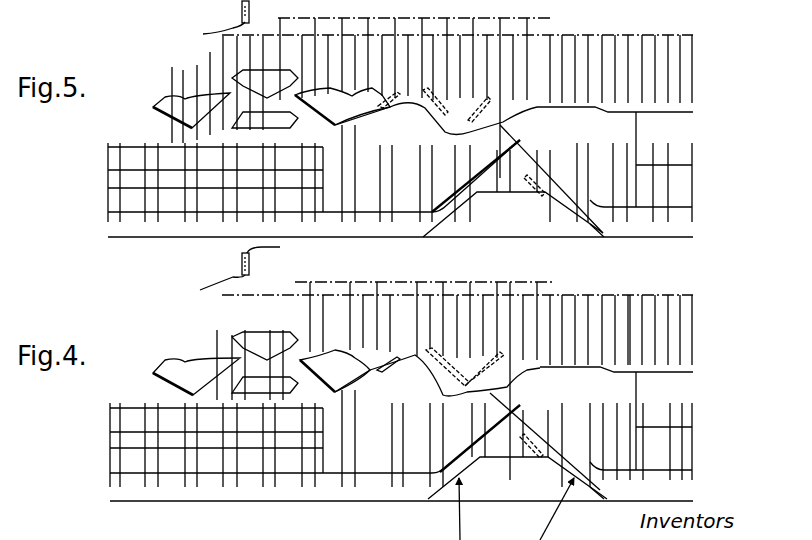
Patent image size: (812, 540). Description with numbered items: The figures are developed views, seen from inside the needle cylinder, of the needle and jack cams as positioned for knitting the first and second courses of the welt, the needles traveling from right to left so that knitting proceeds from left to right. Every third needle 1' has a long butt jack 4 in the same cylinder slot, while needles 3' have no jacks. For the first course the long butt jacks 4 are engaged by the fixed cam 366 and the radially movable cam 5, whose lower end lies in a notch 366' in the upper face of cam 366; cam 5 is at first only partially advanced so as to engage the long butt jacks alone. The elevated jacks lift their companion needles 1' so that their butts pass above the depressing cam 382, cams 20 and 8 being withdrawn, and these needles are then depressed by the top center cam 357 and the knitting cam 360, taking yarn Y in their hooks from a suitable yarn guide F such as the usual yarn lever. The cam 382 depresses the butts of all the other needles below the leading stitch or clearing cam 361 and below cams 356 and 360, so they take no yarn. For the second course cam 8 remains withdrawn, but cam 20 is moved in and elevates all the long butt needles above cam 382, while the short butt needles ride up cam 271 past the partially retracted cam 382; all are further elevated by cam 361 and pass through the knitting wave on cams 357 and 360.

In FIG. 5, the yarn Y is at (208, 32).
In FIG. 4, the yarn Y is at (226, 280).
In FIG. 5, the yarn guide F is at (252, 14).
In FIG. 4, the yarn guide F is at (252, 264).
In FIG. 5, the knitting cam 360 is at (182, 108).
In FIG. 4, the knitting cam 360 is at (197, 378).
In FIG. 5, the cam 356 is at (247, 117).
In FIG. 4, the cam 356 is at (262, 380).
In FIG. 4, the top center cam 357 is at (262, 343).
In FIG. 5, the leading stitch or clearing cam 361 is at (318, 98).
In FIG. 4, the leading stitch or clearing cam 361 is at (320, 364).
In FIG. 5, the depressing cam 382 is at (374, 110).
In FIG. 4, the depressing cam 382 is at (390, 377).
In FIG. 5, the cam 271 is at (418, 110).
In FIG. 4, the cam 271 is at (428, 392).
In FIG. 5, the cam 20 is at (440, 118).
In FIG. 4, the cam 20 is at (433, 352).
In FIG. 5, the cam 8 is at (486, 106).
In FIG. 4, the cam 8 is at (492, 358).
In FIG. 5, the radially movable cam 5 is at (522, 182).
In FIG. 4, the radially movable cam 5 is at (535, 432).
In FIG. 5, the fixed cam 366 is at (551, 131).
In FIG. 4, the fixed cam 366 is at (533, 390).
In FIG. 5, the notch 366' is at (552, 205).
In FIG. 4, the notch 366' is at (536, 478).
In FIG. 5, the needles 3' is at (649, 62).
In FIG. 4, the needles 3' is at (652, 327).
In FIG. 4, the needles 1' is at (658, 314).
In FIG. 4, the long butt jacks 4 is at (694, 483).